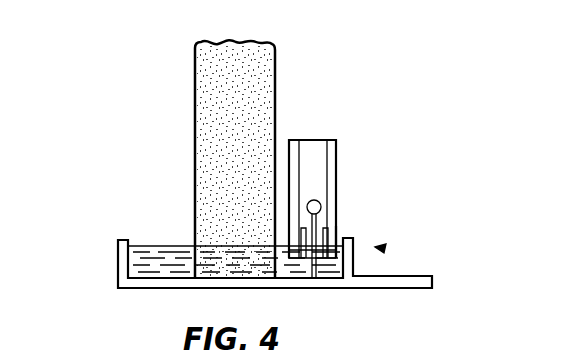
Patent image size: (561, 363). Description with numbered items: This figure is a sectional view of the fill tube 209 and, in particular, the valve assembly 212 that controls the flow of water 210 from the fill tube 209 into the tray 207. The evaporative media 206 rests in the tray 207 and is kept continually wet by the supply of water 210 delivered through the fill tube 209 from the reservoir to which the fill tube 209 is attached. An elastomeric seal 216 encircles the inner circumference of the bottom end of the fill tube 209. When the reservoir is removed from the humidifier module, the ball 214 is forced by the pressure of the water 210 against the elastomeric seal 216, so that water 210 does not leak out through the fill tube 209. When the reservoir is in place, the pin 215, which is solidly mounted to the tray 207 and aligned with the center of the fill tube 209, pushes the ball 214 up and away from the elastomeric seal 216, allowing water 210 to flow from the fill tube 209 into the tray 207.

The evaporative media 206 is at (200, 94).
The tray 207 is at (117, 259).
The fill tube 209 is at (337, 152).
The water 210 is at (158, 246).
The valve assembly 212 is at (380, 248).
The ball 214 is at (322, 202).
The pin 215 is at (320, 266).
The elastomeric seal 216 is at (340, 232).